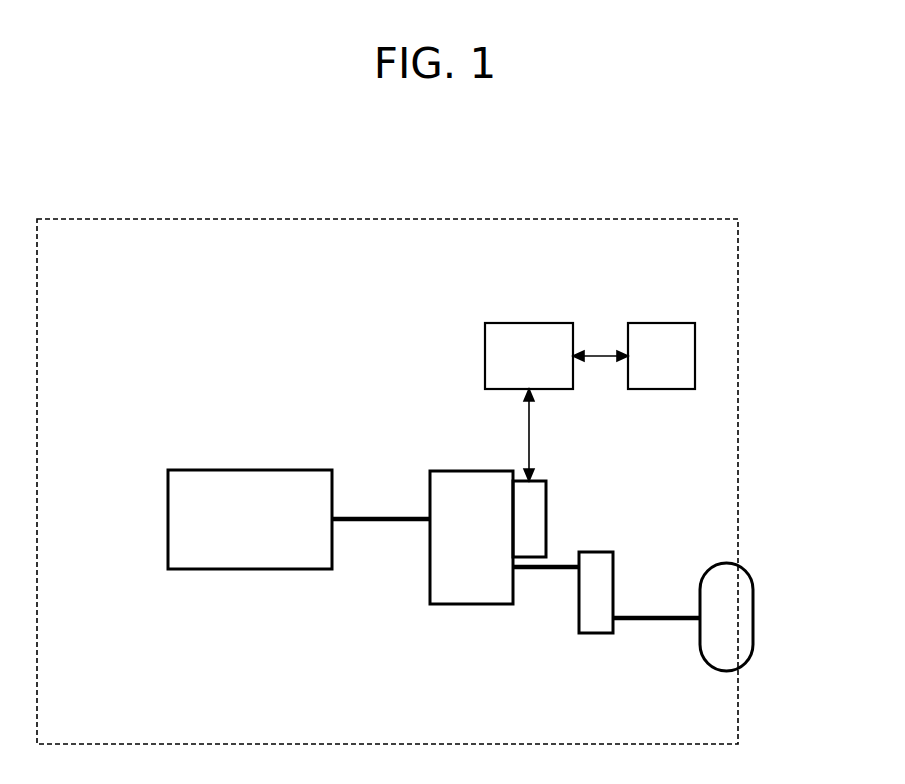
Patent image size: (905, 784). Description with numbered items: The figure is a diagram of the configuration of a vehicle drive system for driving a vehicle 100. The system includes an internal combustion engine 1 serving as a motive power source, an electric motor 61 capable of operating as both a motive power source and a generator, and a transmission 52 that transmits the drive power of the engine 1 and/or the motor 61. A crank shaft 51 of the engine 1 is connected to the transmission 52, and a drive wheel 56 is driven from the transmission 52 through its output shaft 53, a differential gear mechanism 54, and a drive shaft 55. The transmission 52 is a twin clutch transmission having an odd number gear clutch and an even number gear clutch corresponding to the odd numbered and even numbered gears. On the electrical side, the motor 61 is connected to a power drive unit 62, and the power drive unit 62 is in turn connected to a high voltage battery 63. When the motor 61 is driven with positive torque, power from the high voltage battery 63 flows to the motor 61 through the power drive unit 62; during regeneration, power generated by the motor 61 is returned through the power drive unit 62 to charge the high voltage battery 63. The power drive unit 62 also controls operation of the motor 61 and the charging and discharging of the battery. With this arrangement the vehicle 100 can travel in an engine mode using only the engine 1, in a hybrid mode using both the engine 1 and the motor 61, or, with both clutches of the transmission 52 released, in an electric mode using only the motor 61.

The vehicle 100 is at (738, 309).
The internal combustion engine 1 is at (168, 516).
The crank shaft 51 is at (383, 516).
The transmission 52 is at (466, 605).
The output shaft 53 is at (548, 572).
The differential gear mechanism 54 is at (598, 635).
The drive shaft 55 is at (647, 612).
The drive wheel 56 is at (753, 603).
The electric motor 61 is at (546, 497).
The power drive unit 62 is at (529, 323).
The high voltage battery 63 is at (665, 323).